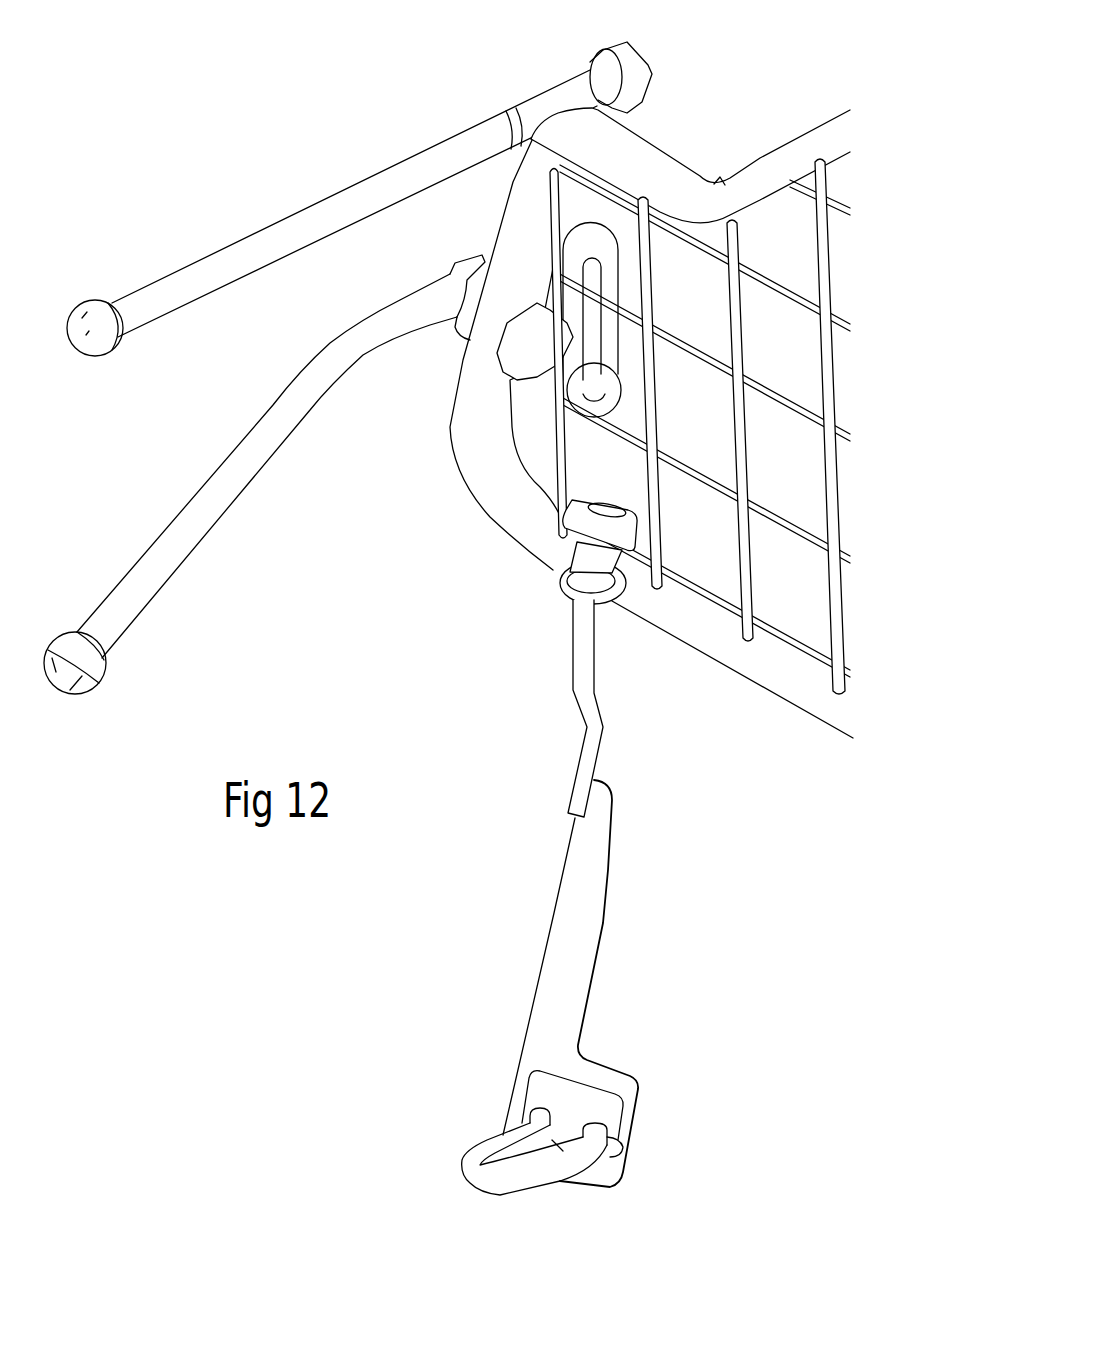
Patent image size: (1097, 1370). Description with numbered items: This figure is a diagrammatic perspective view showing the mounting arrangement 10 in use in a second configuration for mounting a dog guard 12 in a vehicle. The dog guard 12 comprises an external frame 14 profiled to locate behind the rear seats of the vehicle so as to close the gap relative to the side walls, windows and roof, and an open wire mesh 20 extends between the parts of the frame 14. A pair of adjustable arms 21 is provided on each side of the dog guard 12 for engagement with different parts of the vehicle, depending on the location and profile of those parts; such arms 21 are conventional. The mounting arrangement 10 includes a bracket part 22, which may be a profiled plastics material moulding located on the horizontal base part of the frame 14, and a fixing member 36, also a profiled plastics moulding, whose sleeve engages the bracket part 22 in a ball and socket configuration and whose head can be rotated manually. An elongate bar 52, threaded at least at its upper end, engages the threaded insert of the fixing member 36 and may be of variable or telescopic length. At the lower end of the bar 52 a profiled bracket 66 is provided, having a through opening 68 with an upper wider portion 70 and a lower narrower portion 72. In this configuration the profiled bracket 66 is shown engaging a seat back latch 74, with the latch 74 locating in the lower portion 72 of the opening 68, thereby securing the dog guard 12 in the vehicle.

The mounting arrangement 10 is at (528, 346).
The dog guard 12 is at (675, 202).
The external frame 14 is at (772, 677).
The open wire mesh 20 is at (830, 383).
The adjustable arms 21 is at (157, 302).
The bracket part 22 is at (568, 583).
The fixing member 36 is at (582, 523).
The bar 52 is at (593, 703).
The profiled bracket 66 is at (580, 900).
The through opening 68 is at (622, 1123).
The upper wider portion 70 is at (615, 1117).
The lower narrower portion 72 is at (633, 1137).
The seat back latch 74 is at (533, 1190).